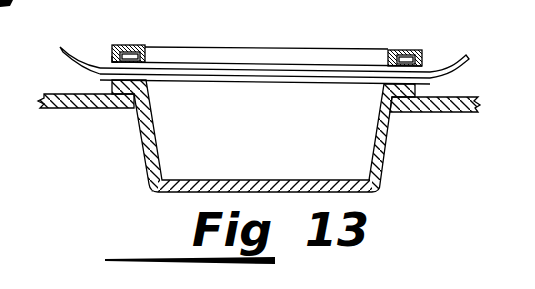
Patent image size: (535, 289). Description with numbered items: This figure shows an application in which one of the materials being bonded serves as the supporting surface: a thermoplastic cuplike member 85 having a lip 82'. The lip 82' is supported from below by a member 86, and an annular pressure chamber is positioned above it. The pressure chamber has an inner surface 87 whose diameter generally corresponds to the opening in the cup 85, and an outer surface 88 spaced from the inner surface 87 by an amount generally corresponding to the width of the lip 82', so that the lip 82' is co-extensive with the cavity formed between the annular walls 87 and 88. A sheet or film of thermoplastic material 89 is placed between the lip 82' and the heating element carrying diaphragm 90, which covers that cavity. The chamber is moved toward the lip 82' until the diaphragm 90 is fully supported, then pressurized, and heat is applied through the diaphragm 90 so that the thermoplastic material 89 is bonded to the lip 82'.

The lip 82' is at (256, 72).
The thermoplastic cuplike member 85 is at (379, 174).
The member 86 is at (82, 110).
The inner surface 87 is at (146, 48).
The outer surface 88 is at (420, 54).
The sheet or film of thermoplastic material 89 is at (466, 58).
The heating element carrying diaphragm 90 is at (112, 62).